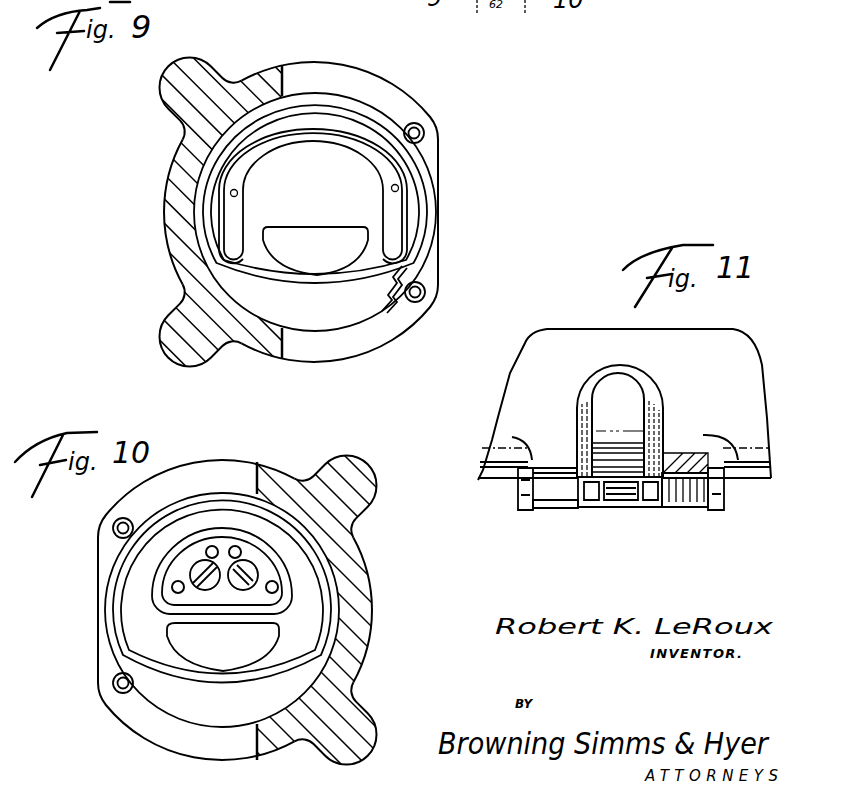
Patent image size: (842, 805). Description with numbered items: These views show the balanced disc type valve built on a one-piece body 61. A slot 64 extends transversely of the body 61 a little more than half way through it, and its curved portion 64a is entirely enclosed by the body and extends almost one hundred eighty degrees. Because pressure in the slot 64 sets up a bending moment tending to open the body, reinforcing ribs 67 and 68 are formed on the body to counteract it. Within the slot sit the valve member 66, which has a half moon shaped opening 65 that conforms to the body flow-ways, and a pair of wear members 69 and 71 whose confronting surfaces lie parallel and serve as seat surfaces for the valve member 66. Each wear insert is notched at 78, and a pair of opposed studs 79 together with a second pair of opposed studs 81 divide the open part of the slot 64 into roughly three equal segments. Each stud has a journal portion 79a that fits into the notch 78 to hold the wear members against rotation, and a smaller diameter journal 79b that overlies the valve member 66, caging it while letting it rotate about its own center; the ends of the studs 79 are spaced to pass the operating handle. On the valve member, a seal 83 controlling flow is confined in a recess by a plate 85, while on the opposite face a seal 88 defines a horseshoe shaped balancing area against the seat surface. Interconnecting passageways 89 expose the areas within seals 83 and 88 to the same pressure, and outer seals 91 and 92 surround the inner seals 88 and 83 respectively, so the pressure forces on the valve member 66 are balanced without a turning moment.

In FIG. 9, the one-piece body 61 is at (239, 352).
In FIG. 10, the one-piece body 61 is at (302, 462).
In FIG. 11, the one-piece body 61 is at (734, 321).
In FIG. 9, the slot 64 is at (360, 76).
In FIG. 10, the slot 64 is at (229, 477).
In FIG. 11, the slot 64 is at (580, 432).
In FIG. 9, the curved portion of slot 64a is at (200, 197).
In FIG. 11, the curved portion of slot 64a is at (610, 367).
In FIG. 9, the half moon shaped opening 65 is at (326, 273).
In FIG. 10, the half moon shaped opening 65 is at (247, 662).
In FIG. 9, the valve member 66 is at (353, 313).
In FIG. 10, the valve member 66 is at (303, 678).
In FIG. 11, the valve member 66 is at (603, 388).
In FIG. 9, the reinforcing rib 67 is at (196, 70).
In FIG. 10, the reinforcing rib 67 is at (357, 462).
In FIG. 9, the reinforcing rib 68 is at (170, 338).
In FIG. 10, the reinforcing rib 68 is at (365, 738).
In FIG. 11, the wear member 69 is at (584, 410).
In FIG. 9, the wear member 71 is at (398, 307).
In FIG. 11, the wear member 71 is at (655, 390).
In FIG. 9, the notch 78 is at (404, 278).
In FIG. 9, the stud 79 is at (426, 292).
In FIG. 10, the stud 79 is at (123, 605).
In FIG. 11, the stud 79 is at (521, 510).
In FIG. 11, the journal portion 79a is at (651, 504).
In FIG. 11, the smaller diameter journal 79b is at (633, 494).
In FIG. 9, the stud 81 is at (425, 133).
In FIG. 10, the seal 83 is at (290, 574).
In FIG. 10, the plate 85 is at (272, 568).
In FIG. 9, the seal 88 is at (412, 209).
In FIG. 9, the interconnecting passageways 89 is at (238, 193).
In FIG. 10, the interconnecting passageways 89 is at (276, 588).
In FIG. 9, the outer seal 91 is at (412, 160).
In FIG. 10, the outer seal 92 is at (307, 542).